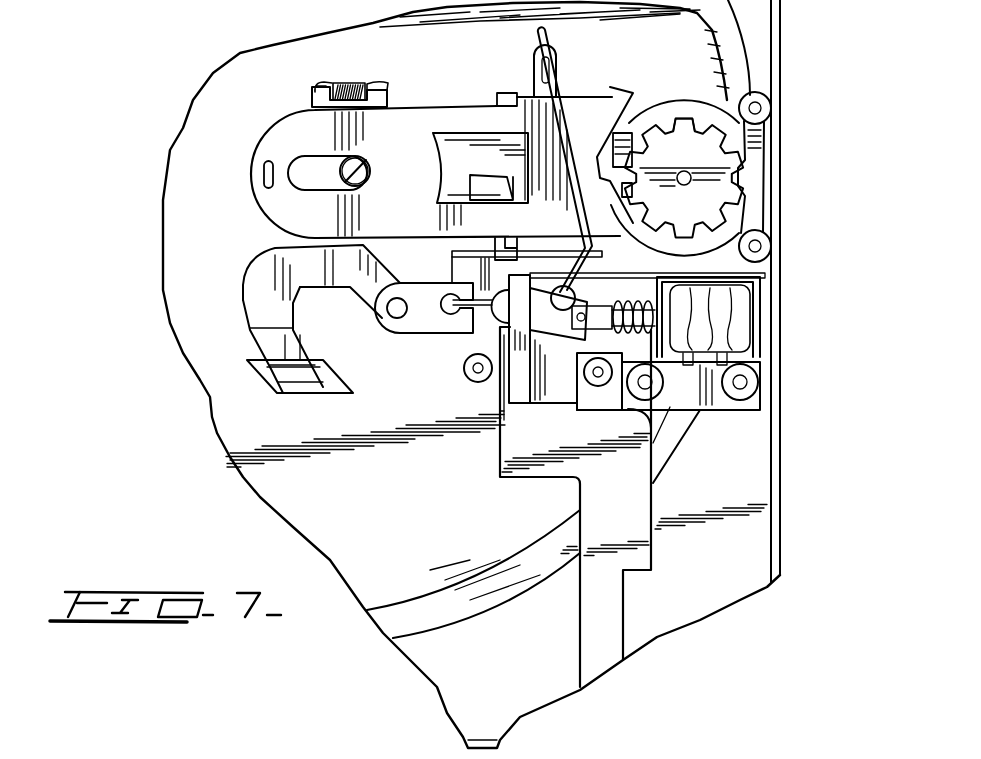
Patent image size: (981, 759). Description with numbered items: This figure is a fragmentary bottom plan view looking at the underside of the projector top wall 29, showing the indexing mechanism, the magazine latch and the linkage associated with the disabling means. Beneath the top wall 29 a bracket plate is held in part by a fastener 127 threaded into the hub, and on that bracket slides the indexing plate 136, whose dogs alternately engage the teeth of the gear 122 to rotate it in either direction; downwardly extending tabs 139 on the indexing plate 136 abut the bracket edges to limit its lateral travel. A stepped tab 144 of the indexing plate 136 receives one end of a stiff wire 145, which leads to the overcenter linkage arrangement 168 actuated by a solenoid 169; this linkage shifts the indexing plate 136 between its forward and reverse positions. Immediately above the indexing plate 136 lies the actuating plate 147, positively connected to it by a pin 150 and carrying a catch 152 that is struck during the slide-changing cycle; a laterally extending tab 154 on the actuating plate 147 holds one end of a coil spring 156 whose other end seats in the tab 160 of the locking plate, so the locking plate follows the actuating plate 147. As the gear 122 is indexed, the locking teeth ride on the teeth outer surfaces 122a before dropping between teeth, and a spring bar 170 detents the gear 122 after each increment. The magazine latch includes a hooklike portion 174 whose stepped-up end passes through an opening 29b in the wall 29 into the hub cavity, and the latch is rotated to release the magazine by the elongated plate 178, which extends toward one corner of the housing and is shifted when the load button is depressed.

The projector top wall 29 is at (387, 513).
The opening in projector wall 29b is at (322, 396).
The gear 122 is at (697, 216).
The teeth outer surfaces 122a is at (674, 117).
The fastener 127 is at (370, 164).
The indexing plate 136 is at (403, 212).
The tabs 139 is at (505, 92).
The tab 144 is at (533, 75).
The stiff wire 145 is at (558, 128).
The actuating plate 147 is at (500, 203).
The pin 150 is at (262, 184).
The catch 152 is at (466, 177).
The tab 154 is at (380, 101).
The coil spring 156 is at (333, 83).
The tab 160 is at (315, 100).
The overcenter linkage arrangement 168 is at (564, 305).
The solenoid 169 is at (722, 327).
The spring bar 170 is at (755, 215).
The hooklike portion 174 is at (250, 320).
The plate 178 is at (548, 463).